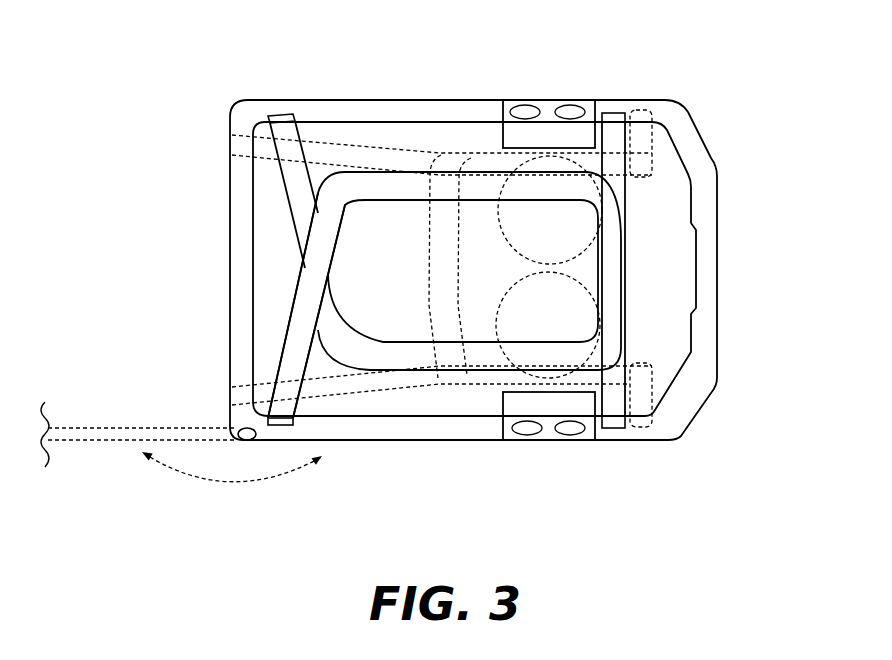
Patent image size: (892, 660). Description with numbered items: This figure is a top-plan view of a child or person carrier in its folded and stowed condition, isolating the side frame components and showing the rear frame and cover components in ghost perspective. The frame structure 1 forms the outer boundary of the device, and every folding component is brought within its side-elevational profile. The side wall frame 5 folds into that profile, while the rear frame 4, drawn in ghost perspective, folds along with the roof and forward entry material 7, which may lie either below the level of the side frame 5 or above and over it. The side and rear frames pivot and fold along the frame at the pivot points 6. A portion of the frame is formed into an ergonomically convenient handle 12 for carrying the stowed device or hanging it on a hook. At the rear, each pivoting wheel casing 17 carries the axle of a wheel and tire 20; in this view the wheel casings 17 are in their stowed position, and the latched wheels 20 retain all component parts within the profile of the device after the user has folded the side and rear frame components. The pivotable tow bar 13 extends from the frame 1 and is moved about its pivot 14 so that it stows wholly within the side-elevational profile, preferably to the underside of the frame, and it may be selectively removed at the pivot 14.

The frame structure 1 is at (688, 400).
The rear frame 4 is at (438, 270).
The side wall frame 5 is at (300, 210).
The pivot points 6 is at (272, 117).
The roof and forward entry material 7 is at (362, 148).
The handle 12 is at (683, 274).
The tow bar 13 is at (85, 441).
The pivot 14 is at (252, 441).
The pivoting wheel casing 17 is at (547, 108).
The wheel and tire 20 is at (506, 220).